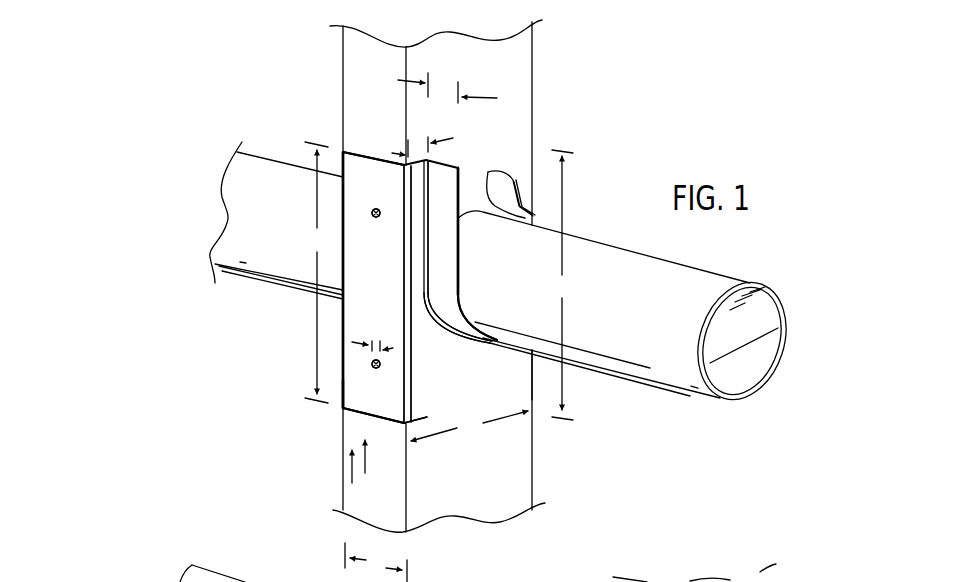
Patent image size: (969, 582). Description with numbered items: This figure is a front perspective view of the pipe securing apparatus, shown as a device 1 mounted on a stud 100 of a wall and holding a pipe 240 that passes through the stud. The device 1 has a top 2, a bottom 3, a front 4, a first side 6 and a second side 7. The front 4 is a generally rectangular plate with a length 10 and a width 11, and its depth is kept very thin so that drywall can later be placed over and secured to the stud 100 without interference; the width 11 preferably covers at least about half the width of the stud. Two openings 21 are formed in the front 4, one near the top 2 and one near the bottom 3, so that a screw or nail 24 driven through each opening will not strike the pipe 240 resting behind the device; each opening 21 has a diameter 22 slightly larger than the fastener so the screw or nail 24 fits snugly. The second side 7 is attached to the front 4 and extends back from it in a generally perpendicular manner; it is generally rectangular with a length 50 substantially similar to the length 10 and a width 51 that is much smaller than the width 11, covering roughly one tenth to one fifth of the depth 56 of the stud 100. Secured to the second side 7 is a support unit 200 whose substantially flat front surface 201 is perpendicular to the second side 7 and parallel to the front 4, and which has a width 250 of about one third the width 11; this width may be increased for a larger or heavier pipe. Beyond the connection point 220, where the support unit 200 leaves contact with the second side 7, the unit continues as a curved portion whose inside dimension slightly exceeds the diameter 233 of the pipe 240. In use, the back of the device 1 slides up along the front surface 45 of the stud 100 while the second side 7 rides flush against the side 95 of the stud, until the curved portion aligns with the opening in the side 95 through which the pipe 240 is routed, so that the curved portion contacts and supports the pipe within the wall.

The device 1 is at (367, 300).
The top 2 is at (363, 153).
The bottom 3 is at (372, 417).
The front 4 is at (366, 406).
The first side 6 is at (343, 392).
The second side 7 is at (418, 411).
The length 10 is at (317, 272).
The width 11 is at (376, 562).
The opening 21 is at (379, 217).
The diameter 22 is at (386, 347).
The screw or nail 24 is at (372, 212).
The front surface 45 is at (401, 455).
The length 50 is at (563, 285).
The width 51 is at (393, 153).
The depth 56 is at (469, 426).
The side 95 is at (506, 386).
The stud 100 is at (394, 508).
The support unit 200 is at (442, 188).
The front surface 201 is at (443, 240).
The connection point 220 is at (427, 293).
The diameter 233 is at (745, 347).
The pipe 240 is at (688, 288).
The width 250 is at (481, 97).